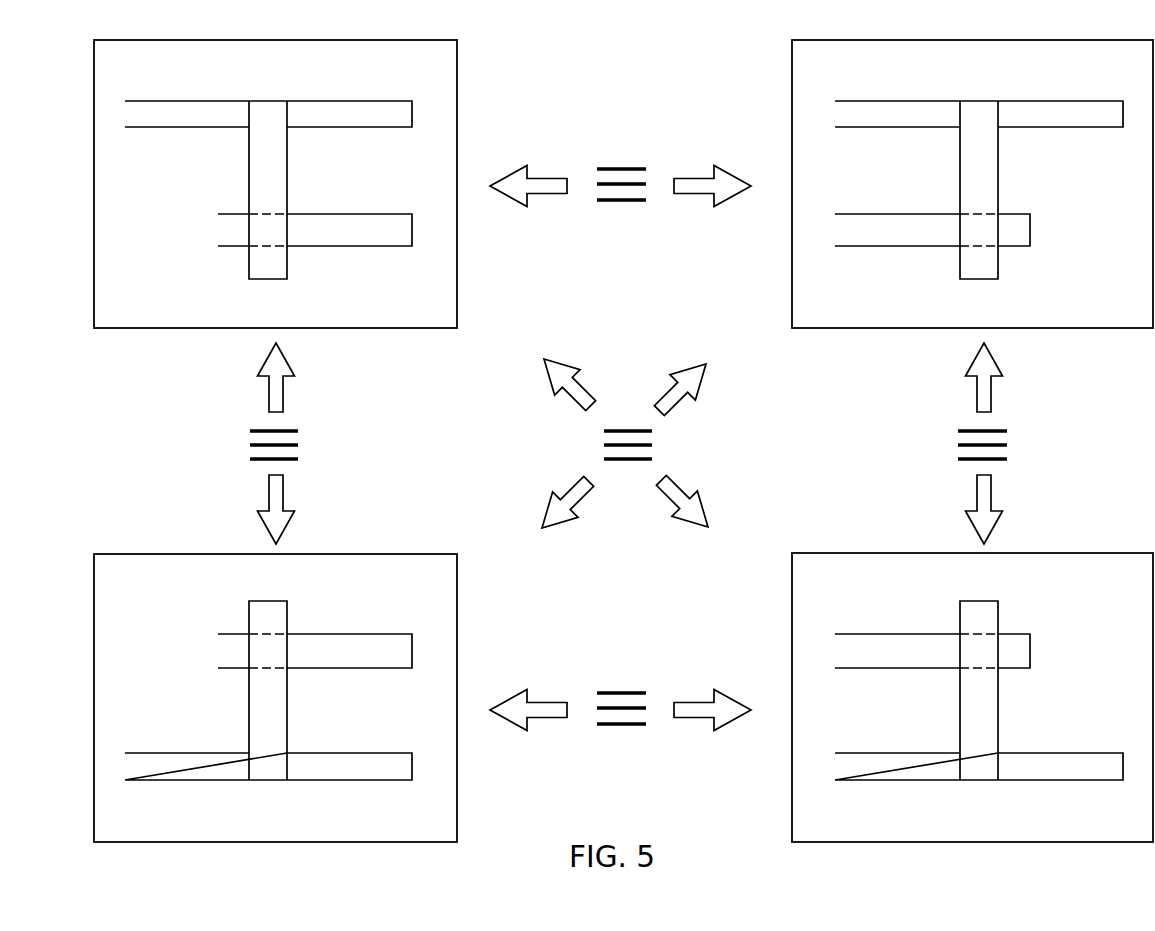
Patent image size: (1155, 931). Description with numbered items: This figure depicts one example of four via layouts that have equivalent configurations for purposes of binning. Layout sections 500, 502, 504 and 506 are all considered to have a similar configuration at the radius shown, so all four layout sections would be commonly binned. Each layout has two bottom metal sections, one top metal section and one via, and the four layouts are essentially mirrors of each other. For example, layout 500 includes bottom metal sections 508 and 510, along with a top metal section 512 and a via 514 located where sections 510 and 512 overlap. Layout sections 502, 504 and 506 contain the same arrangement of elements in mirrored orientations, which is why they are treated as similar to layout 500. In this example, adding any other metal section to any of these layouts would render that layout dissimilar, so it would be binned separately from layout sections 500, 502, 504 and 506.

The layout section 500 is at (275, 184).
The layout section 502 is at (1122, 311).
The layout section 504 is at (423, 825).
The layout section 506 is at (1122, 825).
The bottom metal section 508 is at (377, 113).
The bottom metal section 510 is at (362, 223).
The top metal section 512 is at (267, 112).
The via 514 is at (257, 233).